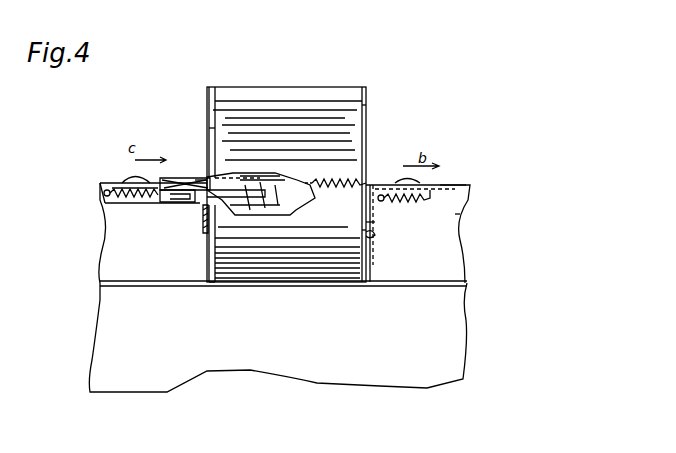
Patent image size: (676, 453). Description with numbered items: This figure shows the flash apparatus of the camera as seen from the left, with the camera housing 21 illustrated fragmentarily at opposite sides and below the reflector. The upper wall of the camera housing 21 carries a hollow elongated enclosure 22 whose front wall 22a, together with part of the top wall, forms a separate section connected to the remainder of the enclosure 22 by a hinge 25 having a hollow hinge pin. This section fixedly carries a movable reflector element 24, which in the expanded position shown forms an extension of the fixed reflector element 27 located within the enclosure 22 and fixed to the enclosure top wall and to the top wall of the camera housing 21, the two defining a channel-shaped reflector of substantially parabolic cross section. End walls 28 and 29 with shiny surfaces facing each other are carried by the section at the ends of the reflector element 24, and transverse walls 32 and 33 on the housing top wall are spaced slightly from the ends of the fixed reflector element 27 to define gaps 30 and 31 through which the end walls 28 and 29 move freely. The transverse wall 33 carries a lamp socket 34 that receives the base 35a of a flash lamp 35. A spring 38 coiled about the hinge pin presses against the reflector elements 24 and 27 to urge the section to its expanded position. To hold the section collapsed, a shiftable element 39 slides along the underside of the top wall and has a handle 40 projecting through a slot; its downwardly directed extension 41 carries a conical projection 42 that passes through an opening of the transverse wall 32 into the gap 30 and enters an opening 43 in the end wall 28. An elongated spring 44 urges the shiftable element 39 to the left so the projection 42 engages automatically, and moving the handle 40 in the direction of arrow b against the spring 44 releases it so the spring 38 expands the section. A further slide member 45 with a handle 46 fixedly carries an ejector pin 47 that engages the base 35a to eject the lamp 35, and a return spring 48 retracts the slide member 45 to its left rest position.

The camera housing 21 is at (108, 358).
The hollow elongated enclosure 22 is at (480, 179).
The front wall 22a is at (458, 214).
The reflector element 24 is at (358, 122).
The hinge 25 is at (261, 186).
The fixed reflector element 27 is at (342, 252).
The end wall 28 is at (365, 142).
The end wall 29 is at (210, 130).
The gap 30 is at (362, 272).
The gap 31 is at (218, 284).
The transverse wall 32 is at (375, 217).
The transverse wall 33 is at (202, 228).
The lamp socket 34 is at (207, 178).
The flash lamp 35 is at (272, 177).
The base 35a is at (197, 178).
The spring 38 is at (348, 179).
The shiftable element 39 is at (432, 184).
The handle 40 is at (401, 180).
The extension 41 is at (378, 223).
The conical projection 42 is at (376, 231).
The opening 43 is at (367, 132).
The spring 44 is at (418, 198).
The slide member 45 is at (160, 181).
The handle 46 is at (131, 178).
The ejector pin 47 is at (170, 200).
The return spring 48 is at (125, 196).